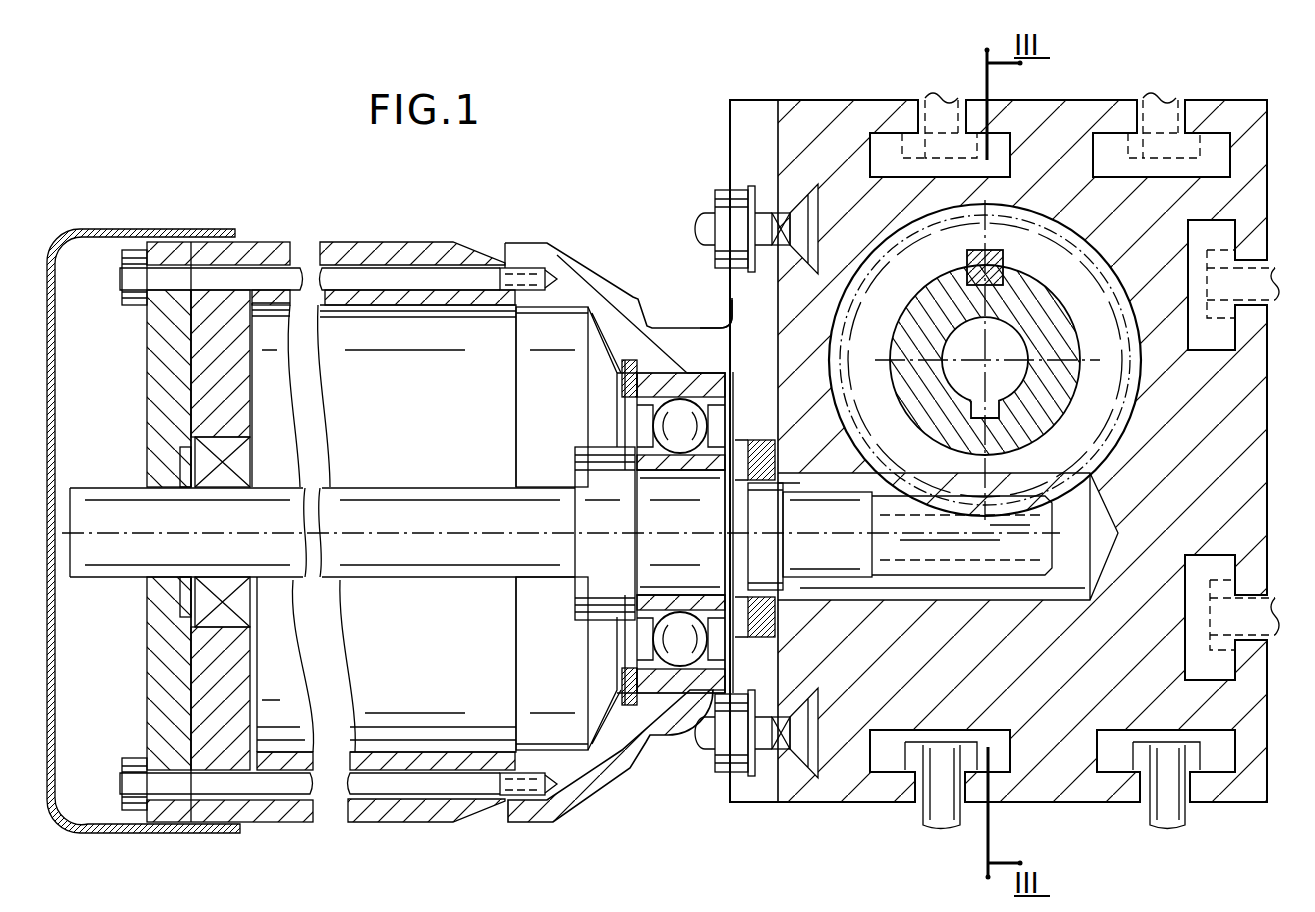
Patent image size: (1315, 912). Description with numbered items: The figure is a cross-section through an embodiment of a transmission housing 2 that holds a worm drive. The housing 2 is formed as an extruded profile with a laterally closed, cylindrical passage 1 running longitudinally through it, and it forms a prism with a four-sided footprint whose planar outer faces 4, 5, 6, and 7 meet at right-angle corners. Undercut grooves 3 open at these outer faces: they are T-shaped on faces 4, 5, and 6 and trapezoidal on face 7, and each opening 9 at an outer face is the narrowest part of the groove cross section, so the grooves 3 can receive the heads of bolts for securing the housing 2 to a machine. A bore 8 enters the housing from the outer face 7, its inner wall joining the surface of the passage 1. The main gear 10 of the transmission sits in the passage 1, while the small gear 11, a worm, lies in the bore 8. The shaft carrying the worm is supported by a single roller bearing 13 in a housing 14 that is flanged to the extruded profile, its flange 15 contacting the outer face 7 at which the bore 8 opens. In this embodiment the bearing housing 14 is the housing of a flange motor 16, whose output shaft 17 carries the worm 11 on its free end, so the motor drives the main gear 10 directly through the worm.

The passage 1 is at (1115, 432).
The transmission housing 2 is at (1245, 94).
The grooves 3 is at (885, 150).
The outer face 4 is at (1104, 102).
The outer face 5 is at (1264, 478).
The outer face 6 is at (815, 803).
The outer face 7 is at (775, 768).
The bore 8 is at (1073, 585).
The openings 9 is at (1182, 108).
The main gear 10 is at (1108, 400).
The small gear 11 is at (1020, 555).
The roller bearing 13 is at (657, 665).
The housing 14 is at (609, 262).
The flange 15 is at (734, 318).
The flange motor 16 is at (298, 238).
The output shaft 17 is at (434, 496).